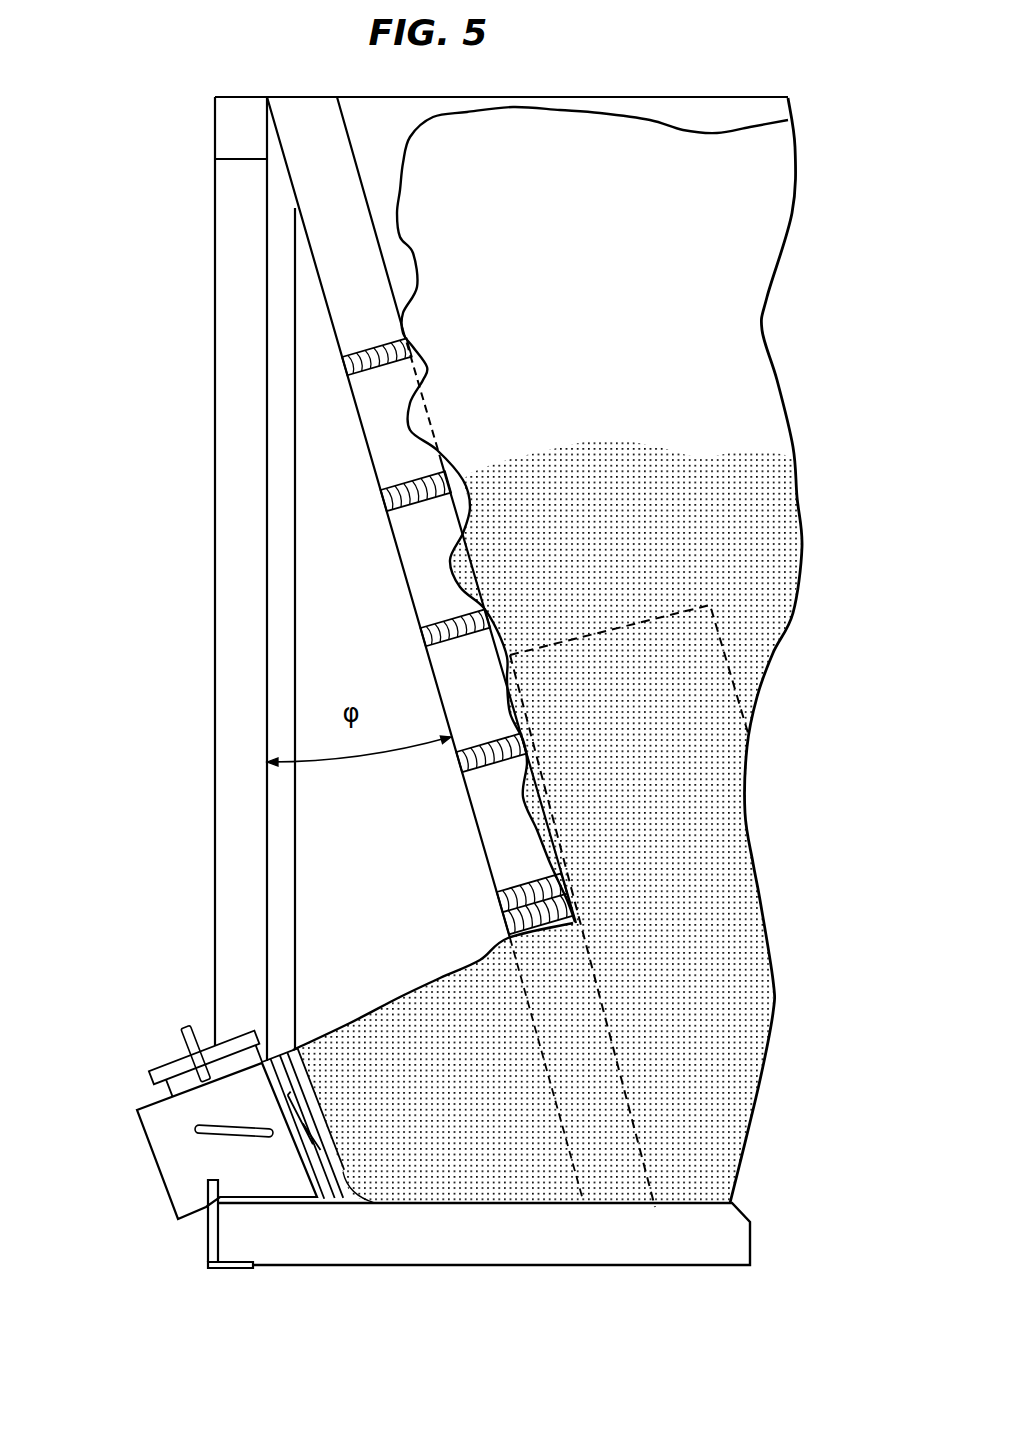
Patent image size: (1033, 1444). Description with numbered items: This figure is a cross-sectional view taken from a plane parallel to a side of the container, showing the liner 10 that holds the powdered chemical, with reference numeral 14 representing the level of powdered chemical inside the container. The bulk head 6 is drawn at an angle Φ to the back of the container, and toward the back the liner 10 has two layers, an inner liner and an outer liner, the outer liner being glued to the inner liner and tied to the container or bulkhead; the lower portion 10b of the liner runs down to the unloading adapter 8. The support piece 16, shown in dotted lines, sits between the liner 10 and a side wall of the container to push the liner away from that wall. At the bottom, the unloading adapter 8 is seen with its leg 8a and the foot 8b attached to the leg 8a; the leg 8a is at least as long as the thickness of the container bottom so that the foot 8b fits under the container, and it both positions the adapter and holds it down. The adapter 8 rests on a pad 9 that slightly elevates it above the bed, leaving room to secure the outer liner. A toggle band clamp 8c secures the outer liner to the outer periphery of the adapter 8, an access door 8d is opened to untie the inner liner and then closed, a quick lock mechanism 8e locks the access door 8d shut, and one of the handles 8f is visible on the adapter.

The bulk head 6 is at (435, 417).
The liner 10 is at (402, 187).
The lower portion of film 10b is at (413, 985).
The level of powdered chemical 14 is at (632, 458).
The support piece 16 is at (728, 658).
The unloading adapter 8 is at (262, 1175).
The leg 8a is at (208, 1234).
The foot 8b is at (231, 1270).
The toggle band clamp 8c is at (327, 1153).
The access door 8d is at (152, 1068).
The quick lock mechanism 8e is at (187, 1025).
The handles 8f is at (196, 1133).
The pad 9 is at (283, 1205).